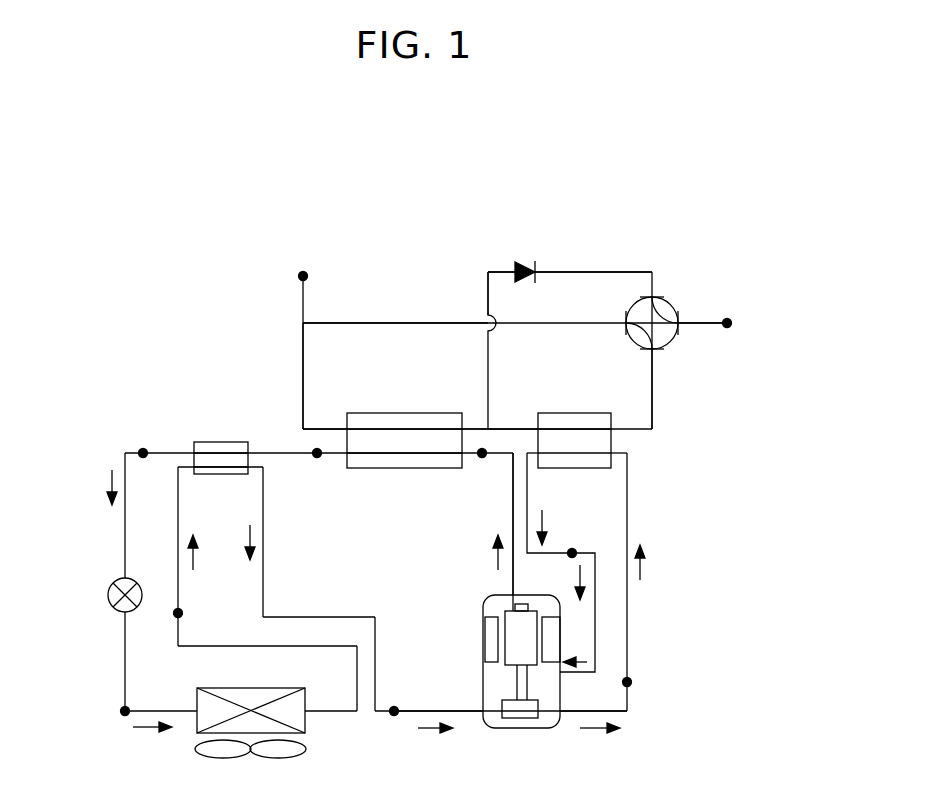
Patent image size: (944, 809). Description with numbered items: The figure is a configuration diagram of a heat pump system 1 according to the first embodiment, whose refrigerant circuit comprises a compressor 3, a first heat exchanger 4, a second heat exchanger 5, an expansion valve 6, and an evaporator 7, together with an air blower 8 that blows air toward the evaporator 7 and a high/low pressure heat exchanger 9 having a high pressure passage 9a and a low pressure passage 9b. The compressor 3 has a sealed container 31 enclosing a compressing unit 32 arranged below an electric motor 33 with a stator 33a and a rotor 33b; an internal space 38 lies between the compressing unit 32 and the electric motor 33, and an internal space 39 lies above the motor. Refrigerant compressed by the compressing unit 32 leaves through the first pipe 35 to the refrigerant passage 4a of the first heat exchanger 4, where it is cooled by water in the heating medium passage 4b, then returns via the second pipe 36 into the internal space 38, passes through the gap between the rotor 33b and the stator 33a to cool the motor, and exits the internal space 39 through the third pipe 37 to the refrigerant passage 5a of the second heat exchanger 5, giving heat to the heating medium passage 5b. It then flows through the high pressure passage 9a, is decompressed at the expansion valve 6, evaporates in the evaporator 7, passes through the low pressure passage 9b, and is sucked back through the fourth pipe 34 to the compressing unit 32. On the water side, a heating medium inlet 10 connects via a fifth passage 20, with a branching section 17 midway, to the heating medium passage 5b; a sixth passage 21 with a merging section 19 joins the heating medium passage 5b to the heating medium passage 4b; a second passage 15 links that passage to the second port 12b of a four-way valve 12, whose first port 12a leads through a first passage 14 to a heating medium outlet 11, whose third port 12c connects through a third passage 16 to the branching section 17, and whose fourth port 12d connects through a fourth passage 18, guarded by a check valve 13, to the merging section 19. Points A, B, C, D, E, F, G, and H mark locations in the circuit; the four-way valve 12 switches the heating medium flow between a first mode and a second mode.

The heat pump system 1 is at (412, 228).
The compressor 3 is at (471, 647).
The first heat exchanger 4 is at (580, 413).
The refrigerant passage 4a is at (598, 456).
The heating medium passage 4b is at (550, 426).
The second heat exchanger 5 is at (400, 413).
The refrigerant passage 5a is at (383, 456).
The heating medium passage 5b is at (360, 426).
The expansion valve 6 is at (115, 583).
The evaporator 7 is at (296, 688).
The air blower 8 is at (306, 749).
The high/low pressure heat exchanger 9 is at (232, 440).
The high pressure passage 9a is at (200, 445).
The low pressure passage 9b is at (222, 472).
The heating medium inlet 10 is at (303, 276).
The heating medium outlet 11 is at (729, 321).
The four-way valve 12 is at (668, 305).
The first port 12a is at (679, 320).
The second port 12b is at (651, 350).
The third port 12c is at (628, 319).
The fourth port 12d is at (652, 299).
The check valve 13 is at (520, 264).
The first passage 14 is at (700, 325).
The second passage 15 is at (650, 431).
The third passage 16 is at (422, 322).
The branching section 17 is at (307, 322).
The fourth passage 18 is at (582, 271).
The merging section 19 is at (486, 426).
The fifth passage 20 is at (302, 365).
The sixth passage 21 is at (510, 426).
The sealed container 31 is at (490, 597).
The compressing unit 32 is at (501, 700).
The electric motor 33 is at (471, 636).
The stator 33a is at (486, 625).
The rotor 33b is at (512, 655).
The fourth pipe 34 is at (468, 714).
The first pipe 35 is at (572, 714).
The second pipe 36 is at (572, 675).
The third pipe 37 is at (515, 580).
The internal space 38 is at (548, 685).
The internal space 39 is at (496, 605).
The point A is at (394, 715).
The point B is at (631, 682).
The point C is at (572, 549).
The point D is at (482, 457).
The point E is at (317, 457).
The point F is at (143, 449).
The point G is at (124, 715).
The point H is at (182, 613).